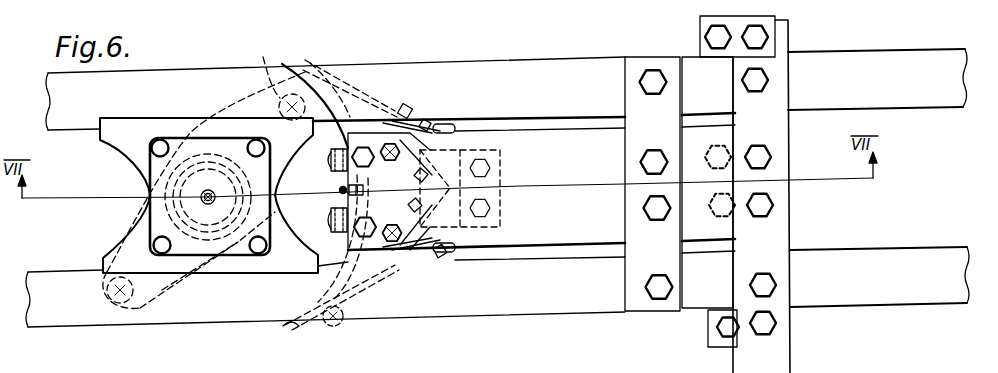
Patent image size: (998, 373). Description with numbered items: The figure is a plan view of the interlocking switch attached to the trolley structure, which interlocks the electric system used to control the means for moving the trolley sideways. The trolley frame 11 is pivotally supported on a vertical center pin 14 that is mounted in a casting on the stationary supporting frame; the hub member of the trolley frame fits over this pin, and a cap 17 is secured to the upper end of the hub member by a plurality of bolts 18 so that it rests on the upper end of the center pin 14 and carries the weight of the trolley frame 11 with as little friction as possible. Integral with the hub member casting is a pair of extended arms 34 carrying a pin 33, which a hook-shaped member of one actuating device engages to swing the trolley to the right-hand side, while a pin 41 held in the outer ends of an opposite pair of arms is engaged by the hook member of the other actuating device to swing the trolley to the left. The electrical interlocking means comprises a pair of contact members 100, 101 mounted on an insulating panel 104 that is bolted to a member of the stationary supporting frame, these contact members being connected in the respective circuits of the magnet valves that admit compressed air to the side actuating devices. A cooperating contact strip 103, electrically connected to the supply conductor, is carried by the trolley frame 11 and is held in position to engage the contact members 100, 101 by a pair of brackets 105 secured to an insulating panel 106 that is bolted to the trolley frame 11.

The trolley frame 11 is at (792, 365).
The vertical center pin 14 is at (130, 216).
The cap 17 is at (222, 268).
The bolts 18 is at (160, 139).
The pin 33 is at (267, 67).
The extended arms 34 is at (252, 100).
The pin 41 is at (106, 290).
The contact member 100 is at (336, 323).
The contact member 101 is at (341, 73).
The contact strip 103 is at (333, 150).
The insulating panel 104 is at (519, 125).
The brackets 105 is at (332, 214).
The insulating panel 106 is at (543, 236).